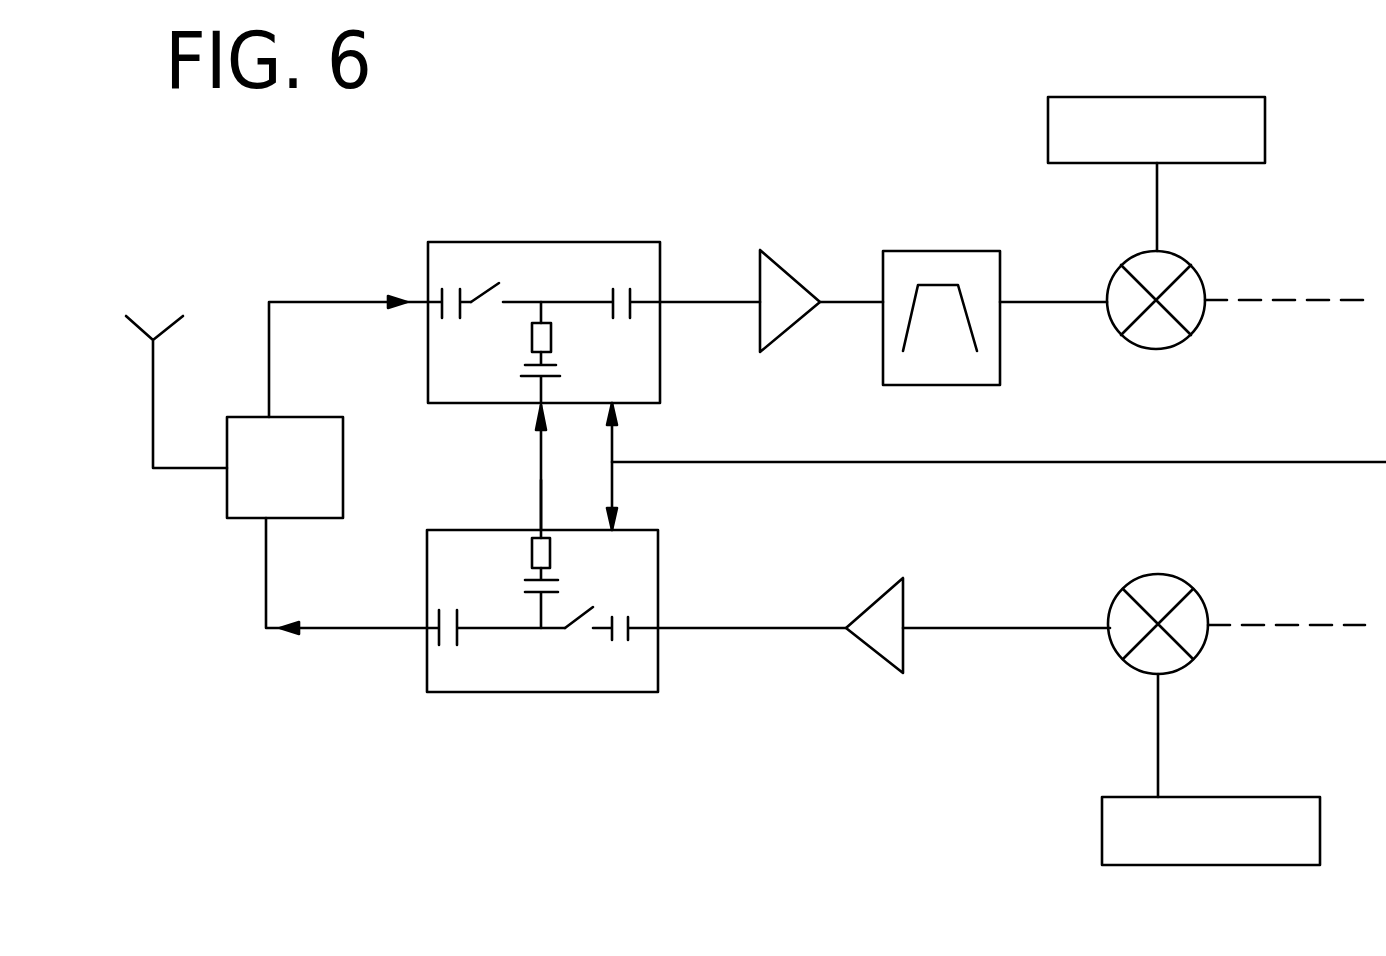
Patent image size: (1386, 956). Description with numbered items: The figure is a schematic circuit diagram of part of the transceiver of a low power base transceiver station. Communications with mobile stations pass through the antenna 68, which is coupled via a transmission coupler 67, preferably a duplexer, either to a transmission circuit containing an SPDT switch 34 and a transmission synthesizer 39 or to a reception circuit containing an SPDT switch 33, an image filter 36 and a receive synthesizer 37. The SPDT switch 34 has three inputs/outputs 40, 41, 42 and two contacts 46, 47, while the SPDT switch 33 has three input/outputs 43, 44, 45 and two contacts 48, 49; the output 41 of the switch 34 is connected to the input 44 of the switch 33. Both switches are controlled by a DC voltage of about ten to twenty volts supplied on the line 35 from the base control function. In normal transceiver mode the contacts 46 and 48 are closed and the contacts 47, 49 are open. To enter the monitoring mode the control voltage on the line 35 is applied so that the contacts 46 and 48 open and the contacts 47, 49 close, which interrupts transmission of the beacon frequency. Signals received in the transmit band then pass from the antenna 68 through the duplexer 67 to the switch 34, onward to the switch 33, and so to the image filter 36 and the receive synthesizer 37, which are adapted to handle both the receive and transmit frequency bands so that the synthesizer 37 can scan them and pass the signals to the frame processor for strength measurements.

The SPDT switch 33 is at (574, 299).
The SPDT switch 34 is at (543, 641).
The line 35 is at (1178, 462).
The image filter 36 is at (898, 268).
The receive synthesizer 37 is at (1250, 140).
The transmission synthesizer 39 is at (1127, 818).
The input/output 40 is at (346, 597).
The output 41 is at (518, 505).
The input/output 42 is at (752, 648).
The input/output 43 is at (348, 356).
The input 44 is at (515, 467).
The input/output 45 is at (717, 302).
The contact 46 is at (578, 614).
The contact 47 is at (532, 553).
The contact 48 is at (484, 293).
The contact 49 is at (551, 340).
The transmission coupler 67 is at (247, 493).
The antenna 68 is at (153, 373).